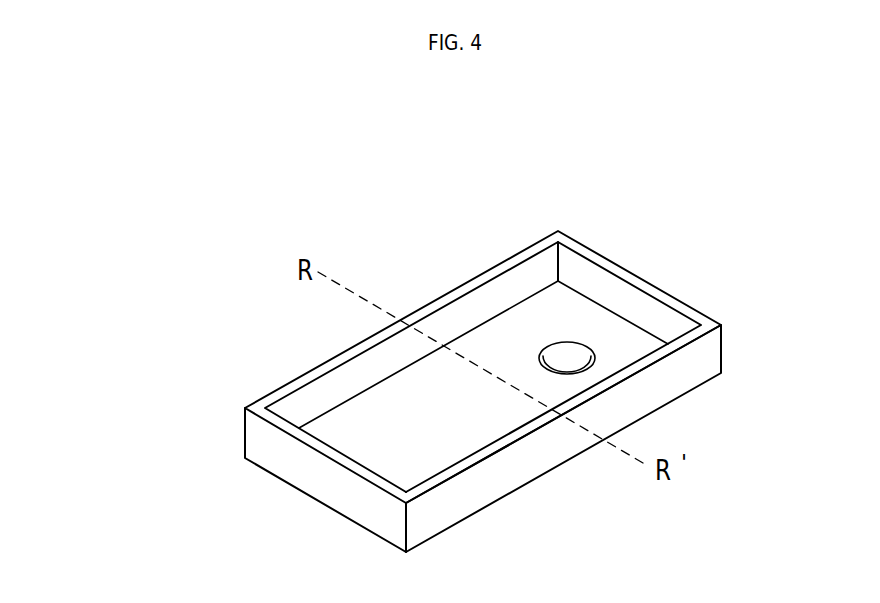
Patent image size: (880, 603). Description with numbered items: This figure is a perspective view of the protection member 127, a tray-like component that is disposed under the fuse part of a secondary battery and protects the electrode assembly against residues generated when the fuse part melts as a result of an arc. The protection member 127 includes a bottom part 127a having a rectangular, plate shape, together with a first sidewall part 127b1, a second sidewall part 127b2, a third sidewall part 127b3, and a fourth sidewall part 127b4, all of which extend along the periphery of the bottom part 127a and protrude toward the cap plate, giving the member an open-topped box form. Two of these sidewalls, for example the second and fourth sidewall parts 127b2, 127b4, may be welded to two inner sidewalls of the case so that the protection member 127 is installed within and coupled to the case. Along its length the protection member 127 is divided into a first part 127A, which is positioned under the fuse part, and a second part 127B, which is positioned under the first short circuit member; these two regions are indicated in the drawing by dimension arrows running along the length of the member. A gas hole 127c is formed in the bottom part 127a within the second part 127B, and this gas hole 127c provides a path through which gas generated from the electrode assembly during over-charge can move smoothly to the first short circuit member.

The protection member 127 is at (157, 256).
The bottom part 127a is at (556, 308).
The first sidewall part 127b1 is at (490, 487).
The second sidewall part 127b2 is at (667, 322).
The third sidewall part 127b3 is at (537, 273).
The fourth sidewall part 127b4 is at (328, 485).
The gas hole 127c is at (579, 357).
The first part 127A is at (350, 291).
The second part 127B is at (505, 205).